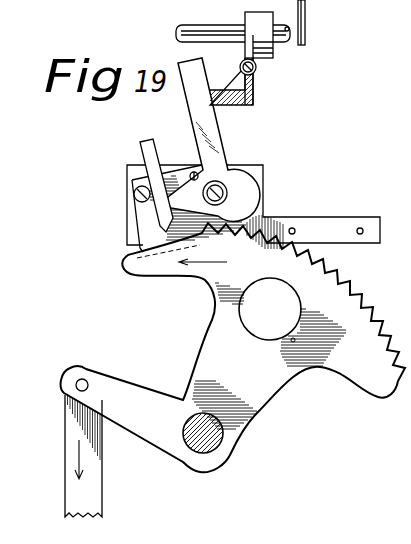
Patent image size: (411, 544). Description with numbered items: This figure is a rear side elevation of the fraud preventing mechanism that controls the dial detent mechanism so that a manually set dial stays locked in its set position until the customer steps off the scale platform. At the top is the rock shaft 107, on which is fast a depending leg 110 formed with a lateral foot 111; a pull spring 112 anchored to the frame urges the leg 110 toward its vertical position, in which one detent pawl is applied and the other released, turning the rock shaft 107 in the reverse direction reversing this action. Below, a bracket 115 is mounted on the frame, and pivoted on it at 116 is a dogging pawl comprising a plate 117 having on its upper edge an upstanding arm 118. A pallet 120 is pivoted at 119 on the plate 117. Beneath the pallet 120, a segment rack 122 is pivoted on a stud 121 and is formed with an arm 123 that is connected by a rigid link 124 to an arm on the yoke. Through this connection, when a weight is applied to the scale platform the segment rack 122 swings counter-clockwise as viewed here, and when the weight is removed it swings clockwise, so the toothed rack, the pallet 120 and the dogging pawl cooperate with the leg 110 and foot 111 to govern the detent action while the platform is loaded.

The rock shaft 107 is at (215, 30).
The depending leg 110 is at (255, 85).
The lateral foot 111 is at (215, 104).
The pull spring 112 is at (257, 68).
The bracket 115 is at (265, 177).
The pivot 116 is at (133, 193).
The plate 117 is at (142, 232).
The upstanding arm 118 is at (192, 116).
The pivot 119 is at (221, 186).
The pallet 120 is at (167, 205).
The stud 121 is at (218, 438).
The segment rack 122 is at (350, 294).
The arm 123 is at (135, 398).
The rigid link 124 is at (91, 492).